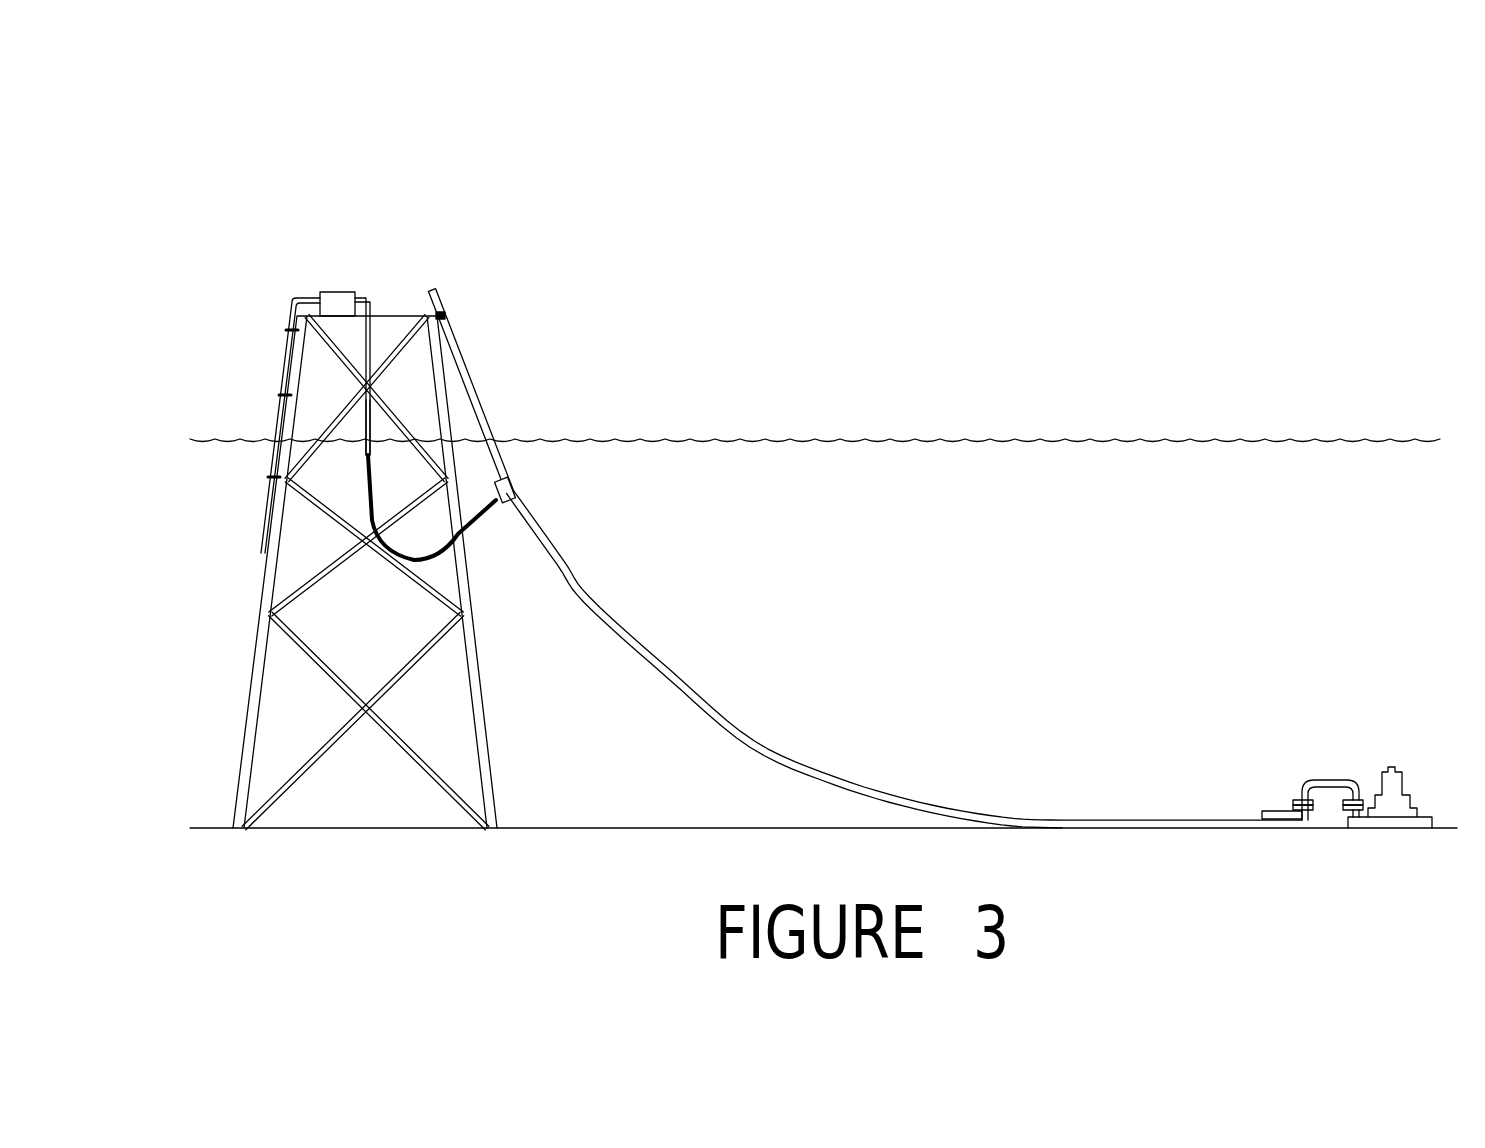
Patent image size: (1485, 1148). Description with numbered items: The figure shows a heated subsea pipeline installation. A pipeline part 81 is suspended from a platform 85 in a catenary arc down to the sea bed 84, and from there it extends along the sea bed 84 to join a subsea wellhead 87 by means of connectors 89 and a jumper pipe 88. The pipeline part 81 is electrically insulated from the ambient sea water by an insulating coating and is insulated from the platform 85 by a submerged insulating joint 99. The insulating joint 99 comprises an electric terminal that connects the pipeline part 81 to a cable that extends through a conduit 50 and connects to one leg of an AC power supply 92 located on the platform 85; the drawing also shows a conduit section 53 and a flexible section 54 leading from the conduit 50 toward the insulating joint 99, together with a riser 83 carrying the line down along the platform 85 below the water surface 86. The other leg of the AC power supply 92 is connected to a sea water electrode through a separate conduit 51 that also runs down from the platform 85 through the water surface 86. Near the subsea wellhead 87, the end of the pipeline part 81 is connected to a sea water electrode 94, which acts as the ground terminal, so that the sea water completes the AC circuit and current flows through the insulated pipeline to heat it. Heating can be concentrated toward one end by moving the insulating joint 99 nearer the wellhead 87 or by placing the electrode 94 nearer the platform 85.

The conduit 50 is at (368, 305).
The conduit 51 is at (290, 340).
The rigid conduit section 53 is at (368, 442).
The flexible hose 54 is at (370, 485).
The pipeline part 81 is at (570, 578).
The riser 83 is at (437, 313).
The sea bed 84 is at (649, 828).
The platform 85 is at (499, 716).
The water surface 86 is at (1345, 439).
The subsea wellhead 87 is at (1375, 742).
The jumper pipe 88 is at (1327, 780).
The connectors 89 is at (1302, 798).
The AC power supply 92 is at (337, 297).
The sea water electrode 94 is at (1275, 811).
The insulating joint 99 is at (509, 488).